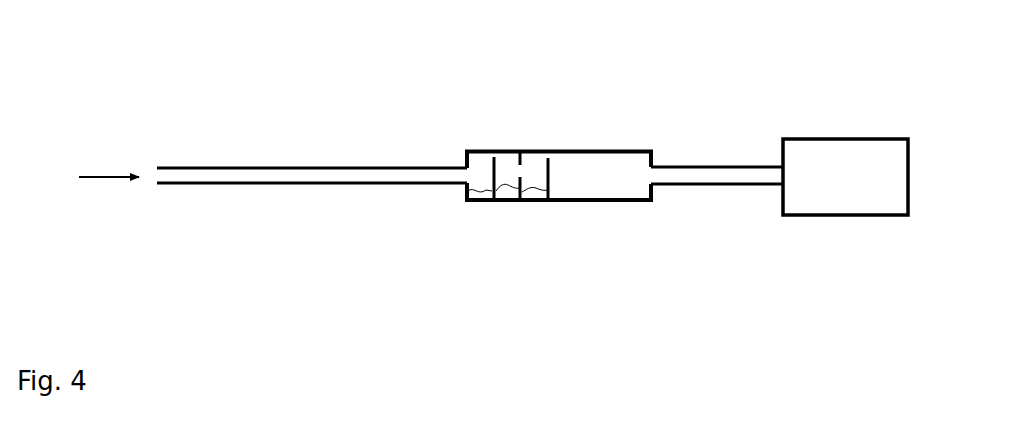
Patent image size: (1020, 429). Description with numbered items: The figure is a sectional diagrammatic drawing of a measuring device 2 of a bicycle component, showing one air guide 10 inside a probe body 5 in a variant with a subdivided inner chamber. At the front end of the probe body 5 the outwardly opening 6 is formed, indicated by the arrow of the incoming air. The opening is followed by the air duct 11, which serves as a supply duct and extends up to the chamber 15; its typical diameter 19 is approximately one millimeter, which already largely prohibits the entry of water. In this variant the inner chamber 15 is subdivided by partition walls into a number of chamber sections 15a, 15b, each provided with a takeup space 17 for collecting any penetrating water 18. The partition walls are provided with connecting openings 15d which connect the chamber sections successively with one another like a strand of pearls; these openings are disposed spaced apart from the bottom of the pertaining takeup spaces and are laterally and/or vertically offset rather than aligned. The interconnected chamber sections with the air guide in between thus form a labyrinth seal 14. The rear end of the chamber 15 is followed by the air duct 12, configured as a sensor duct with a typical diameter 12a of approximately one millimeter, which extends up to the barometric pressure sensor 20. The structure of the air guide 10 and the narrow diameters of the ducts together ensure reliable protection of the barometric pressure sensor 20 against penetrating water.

The measuring device 2 is at (211, 60).
The probe body 5 is at (636, 150).
The outwardly opening 6 is at (156, 176).
The air guide 10 is at (228, 165).
The air duct 11 is at (262, 175).
The air duct 12 is at (708, 177).
The diameter 12a is at (756, 196).
The labyrinth seal 14 is at (520, 124).
The chamber 15 is at (498, 133).
The chamber section 15a is at (467, 203).
The chamber section 15b is at (498, 205).
The connecting openings 15d is at (502, 157).
The takeup space 17 is at (483, 172).
The penetrating water 18 is at (533, 194).
The diameter 19 is at (325, 197).
The barometric pressure sensor 20 is at (838, 152).